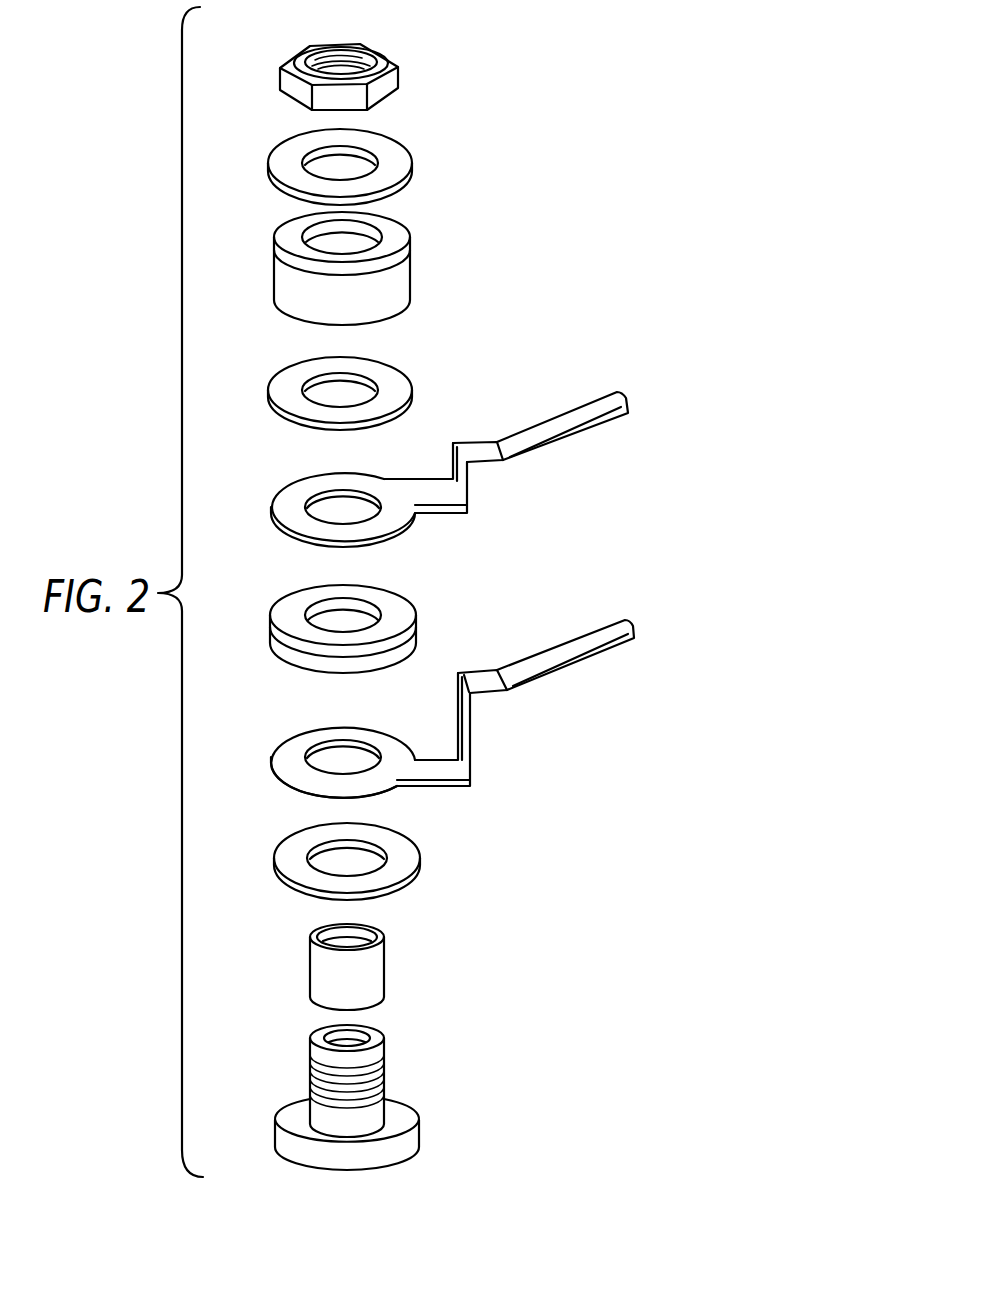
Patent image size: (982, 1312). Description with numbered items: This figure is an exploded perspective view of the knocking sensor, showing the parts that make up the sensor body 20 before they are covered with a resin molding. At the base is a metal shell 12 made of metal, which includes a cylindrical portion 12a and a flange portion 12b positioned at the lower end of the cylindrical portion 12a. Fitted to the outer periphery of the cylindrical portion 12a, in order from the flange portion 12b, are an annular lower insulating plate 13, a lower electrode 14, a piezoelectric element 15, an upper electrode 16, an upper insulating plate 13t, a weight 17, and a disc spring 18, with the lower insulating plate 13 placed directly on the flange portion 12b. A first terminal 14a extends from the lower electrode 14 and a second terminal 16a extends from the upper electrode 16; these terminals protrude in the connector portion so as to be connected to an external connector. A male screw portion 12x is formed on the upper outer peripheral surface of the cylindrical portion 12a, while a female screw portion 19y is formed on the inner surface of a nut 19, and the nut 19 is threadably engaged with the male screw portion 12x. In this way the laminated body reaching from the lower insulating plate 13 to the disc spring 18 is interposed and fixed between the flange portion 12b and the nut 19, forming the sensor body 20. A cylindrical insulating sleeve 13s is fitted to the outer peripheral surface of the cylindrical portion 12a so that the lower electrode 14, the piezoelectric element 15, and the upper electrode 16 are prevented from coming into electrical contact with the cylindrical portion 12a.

The sensor body 20 is at (586, 78).
The nut 19 is at (399, 78).
The female screw portion 19y is at (368, 47).
The disc spring 18 is at (394, 147).
The weight 17 is at (394, 283).
The upper insulating plate 13t is at (397, 380).
The upper electrode 16 is at (290, 492).
The second terminal 16a is at (573, 411).
The piezoelectric element 15 is at (293, 603).
The lower electrode 14 is at (297, 740).
The first terminal 14a is at (597, 637).
The lower insulating plate 13 is at (402, 850).
The insulating sleeve 13s is at (317, 965).
The metal shell 12 is at (392, 1030).
The cylindrical portion 12a is at (318, 1042).
The male screw portion 12x is at (395, 1085).
The flange portion 12b is at (413, 1120).